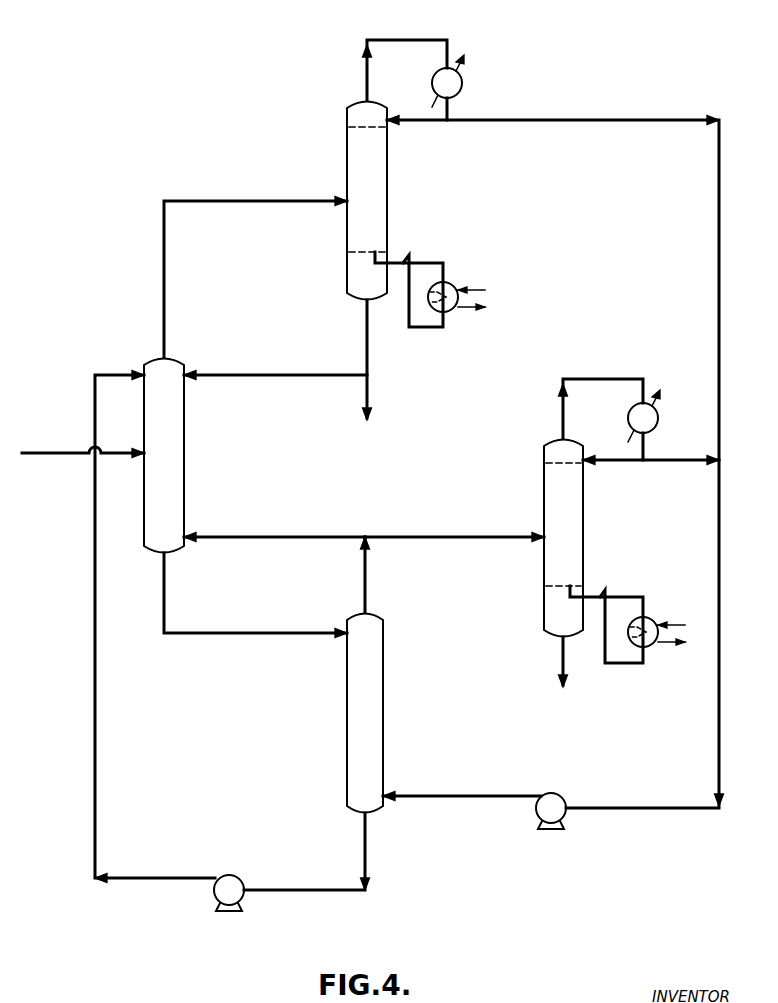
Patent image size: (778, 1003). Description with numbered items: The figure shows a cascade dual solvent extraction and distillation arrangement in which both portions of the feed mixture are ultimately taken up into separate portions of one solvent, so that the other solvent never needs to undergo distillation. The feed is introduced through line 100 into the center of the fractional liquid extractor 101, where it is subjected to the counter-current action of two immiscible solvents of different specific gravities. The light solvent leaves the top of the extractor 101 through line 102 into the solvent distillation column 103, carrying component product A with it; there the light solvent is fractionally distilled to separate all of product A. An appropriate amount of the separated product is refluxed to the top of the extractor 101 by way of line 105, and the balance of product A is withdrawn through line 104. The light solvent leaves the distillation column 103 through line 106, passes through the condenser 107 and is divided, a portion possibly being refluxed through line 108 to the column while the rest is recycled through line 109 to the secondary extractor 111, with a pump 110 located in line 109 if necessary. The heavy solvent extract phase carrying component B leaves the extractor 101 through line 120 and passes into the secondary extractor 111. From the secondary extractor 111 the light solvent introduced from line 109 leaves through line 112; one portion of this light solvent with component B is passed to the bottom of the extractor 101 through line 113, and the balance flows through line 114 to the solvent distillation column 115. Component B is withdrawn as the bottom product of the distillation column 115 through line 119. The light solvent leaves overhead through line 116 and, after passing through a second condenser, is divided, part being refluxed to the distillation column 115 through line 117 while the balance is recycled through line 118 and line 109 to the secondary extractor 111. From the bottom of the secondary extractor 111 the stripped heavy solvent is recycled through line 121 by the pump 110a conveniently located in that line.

The line 100 is at (83, 454).
The fractional liquid extractor 101 is at (175, 441).
The line 102 is at (255, 277).
The solvent distillation column 103 is at (378, 196).
The line 104 is at (380, 409).
The line 105 is at (275, 340).
The line 106 is at (405, 59).
The condenser 107 is at (466, 81).
The line 108 is at (417, 118).
The line 109 is at (553, 462).
The pump 110 is at (552, 819).
The pump 110a is at (232, 901).
The secondary extractor 111 is at (378, 716).
The line 112 is at (382, 574).
The line 113 is at (274, 528).
The line 114 is at (454, 528).
The solvent distillation column 115 is at (574, 529).
The line 116 is at (601, 397).
The line 117 is at (613, 449).
The line 118 is at (681, 469).
The line 119 is at (551, 676).
The line 120 is at (255, 595).
The line 121 is at (215, 631).